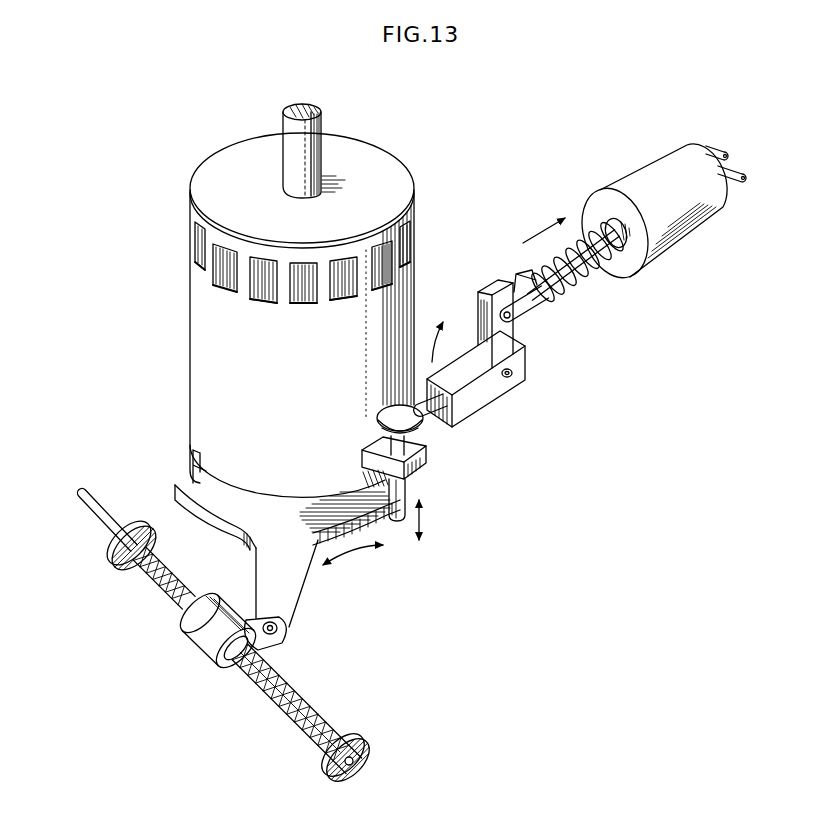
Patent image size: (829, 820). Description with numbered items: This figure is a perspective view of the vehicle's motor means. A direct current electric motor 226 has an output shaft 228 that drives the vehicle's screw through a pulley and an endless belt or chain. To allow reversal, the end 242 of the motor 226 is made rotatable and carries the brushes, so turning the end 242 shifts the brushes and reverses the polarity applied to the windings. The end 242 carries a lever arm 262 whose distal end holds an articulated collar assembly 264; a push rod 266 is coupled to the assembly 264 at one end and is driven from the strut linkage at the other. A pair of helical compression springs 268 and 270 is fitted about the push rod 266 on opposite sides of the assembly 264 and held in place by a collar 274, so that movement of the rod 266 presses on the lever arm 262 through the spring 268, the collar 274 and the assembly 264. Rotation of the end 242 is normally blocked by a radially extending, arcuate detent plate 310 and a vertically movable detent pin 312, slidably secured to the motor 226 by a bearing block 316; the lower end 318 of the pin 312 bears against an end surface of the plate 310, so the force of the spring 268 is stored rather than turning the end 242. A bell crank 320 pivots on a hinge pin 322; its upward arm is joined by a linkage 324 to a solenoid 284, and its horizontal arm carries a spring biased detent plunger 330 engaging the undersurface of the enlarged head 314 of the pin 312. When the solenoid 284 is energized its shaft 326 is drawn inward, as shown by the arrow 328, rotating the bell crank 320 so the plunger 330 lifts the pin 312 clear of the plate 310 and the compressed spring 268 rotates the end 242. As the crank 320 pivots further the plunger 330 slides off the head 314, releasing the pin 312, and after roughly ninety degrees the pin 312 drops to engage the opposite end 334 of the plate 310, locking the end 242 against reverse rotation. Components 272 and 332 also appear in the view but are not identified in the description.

The direct current electric motor 226 is at (413, 288).
The output shaft 228 is at (312, 153).
The end 242 is at (380, 481).
The lever arm 262 is at (290, 588).
The articulated collar assembly 264 is at (283, 628).
The push rod 266 is at (107, 510).
The helical compression spring 268 is at (165, 587).
The helical compression spring 270 is at (317, 707).
The washer 272 is at (118, 560).
The collar 274 is at (327, 770).
The solenoid 284 is at (662, 160).
The detent plate 310 is at (340, 506).
The detent pin 312 is at (407, 491).
The enlarged head 314 is at (383, 415).
The bearing block 316 is at (420, 461).
The lower end 318 is at (393, 522).
The bell crank 320 is at (487, 398).
The hinge pin 322 is at (514, 373).
The linkage 324 is at (511, 278).
The shaft 326 is at (613, 268).
The arrow 328 is at (538, 227).
The detent plunger 330 is at (432, 416).
The link 332 is at (563, 289).
The opposite end 334 is at (190, 482).